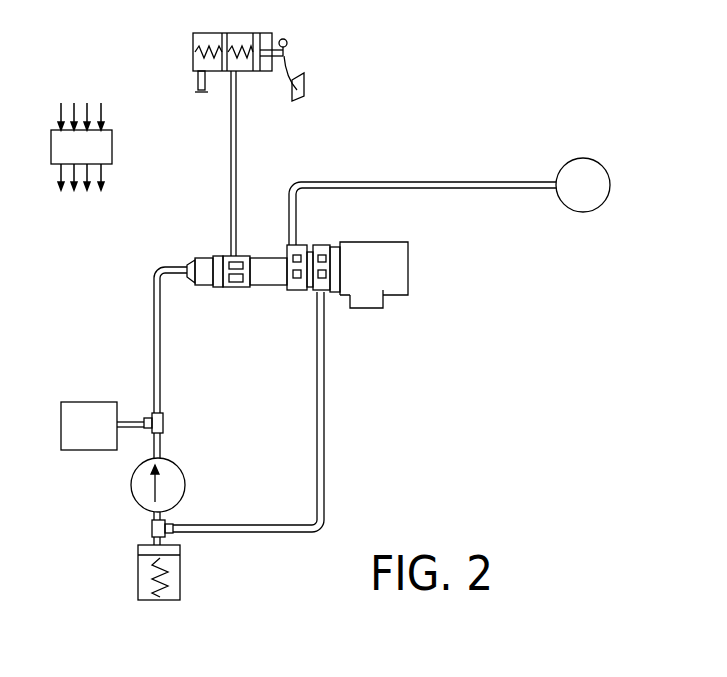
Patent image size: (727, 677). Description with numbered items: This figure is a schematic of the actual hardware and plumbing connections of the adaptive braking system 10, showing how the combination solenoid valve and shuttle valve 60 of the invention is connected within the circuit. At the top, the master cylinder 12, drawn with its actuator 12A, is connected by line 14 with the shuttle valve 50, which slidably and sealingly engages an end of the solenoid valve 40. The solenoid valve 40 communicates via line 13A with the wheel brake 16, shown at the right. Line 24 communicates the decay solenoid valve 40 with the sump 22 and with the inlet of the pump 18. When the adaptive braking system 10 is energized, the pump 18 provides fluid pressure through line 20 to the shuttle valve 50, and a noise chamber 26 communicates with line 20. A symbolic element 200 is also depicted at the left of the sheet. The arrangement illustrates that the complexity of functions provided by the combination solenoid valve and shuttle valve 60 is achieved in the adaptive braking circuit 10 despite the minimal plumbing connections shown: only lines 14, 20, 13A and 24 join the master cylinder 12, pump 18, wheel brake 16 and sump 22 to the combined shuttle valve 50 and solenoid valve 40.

The adaptive braking system 10 is at (453, 75).
The master cylinder 12 is at (193, 36).
The valve actuator pedal 12A is at (248, 33).
The line 13A is at (437, 181).
The line 14 is at (238, 130).
The wheel brake 16 is at (572, 199).
The pump 18 is at (186, 480).
The line 20 is at (162, 446).
The sump 22 is at (181, 570).
The line 24 is at (317, 382).
The noise chamber 26 is at (76, 441).
The solenoid valve 40 is at (397, 263).
The shuttle valve 50 is at (218, 255).
The combination solenoid valve and shuttle valve 60 is at (418, 294).
The heat exchanger 200 is at (81, 146).